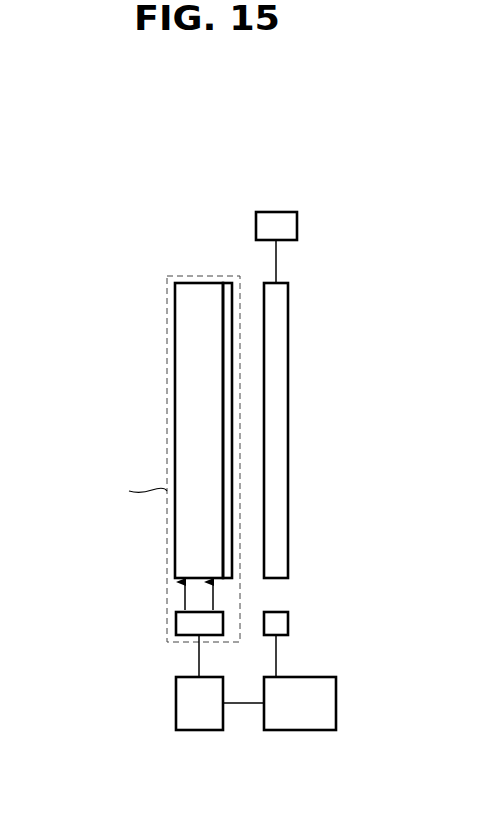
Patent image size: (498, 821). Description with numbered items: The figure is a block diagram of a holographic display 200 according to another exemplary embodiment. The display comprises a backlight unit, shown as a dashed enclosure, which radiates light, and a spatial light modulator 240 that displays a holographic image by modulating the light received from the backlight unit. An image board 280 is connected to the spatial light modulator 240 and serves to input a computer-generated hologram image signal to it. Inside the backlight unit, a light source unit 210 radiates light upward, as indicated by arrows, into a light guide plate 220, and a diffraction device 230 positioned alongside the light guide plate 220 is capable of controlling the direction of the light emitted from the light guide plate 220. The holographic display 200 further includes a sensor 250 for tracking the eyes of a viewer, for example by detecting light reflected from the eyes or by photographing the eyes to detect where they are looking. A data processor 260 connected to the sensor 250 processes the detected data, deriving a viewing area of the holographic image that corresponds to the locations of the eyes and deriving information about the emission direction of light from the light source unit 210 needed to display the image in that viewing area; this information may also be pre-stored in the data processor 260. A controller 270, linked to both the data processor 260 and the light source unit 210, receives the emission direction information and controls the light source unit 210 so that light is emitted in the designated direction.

The holographic display 200 is at (105, 236).
The light source unit 210 is at (180, 623).
The light guide plate 220 is at (189, 292).
The diffraction device 230 is at (230, 290).
The spatial light modulator 240 is at (288, 312).
The sensor 250 is at (288, 623).
The data processor 260 is at (297, 730).
The controller 270 is at (196, 730).
The image board 280 is at (274, 217).